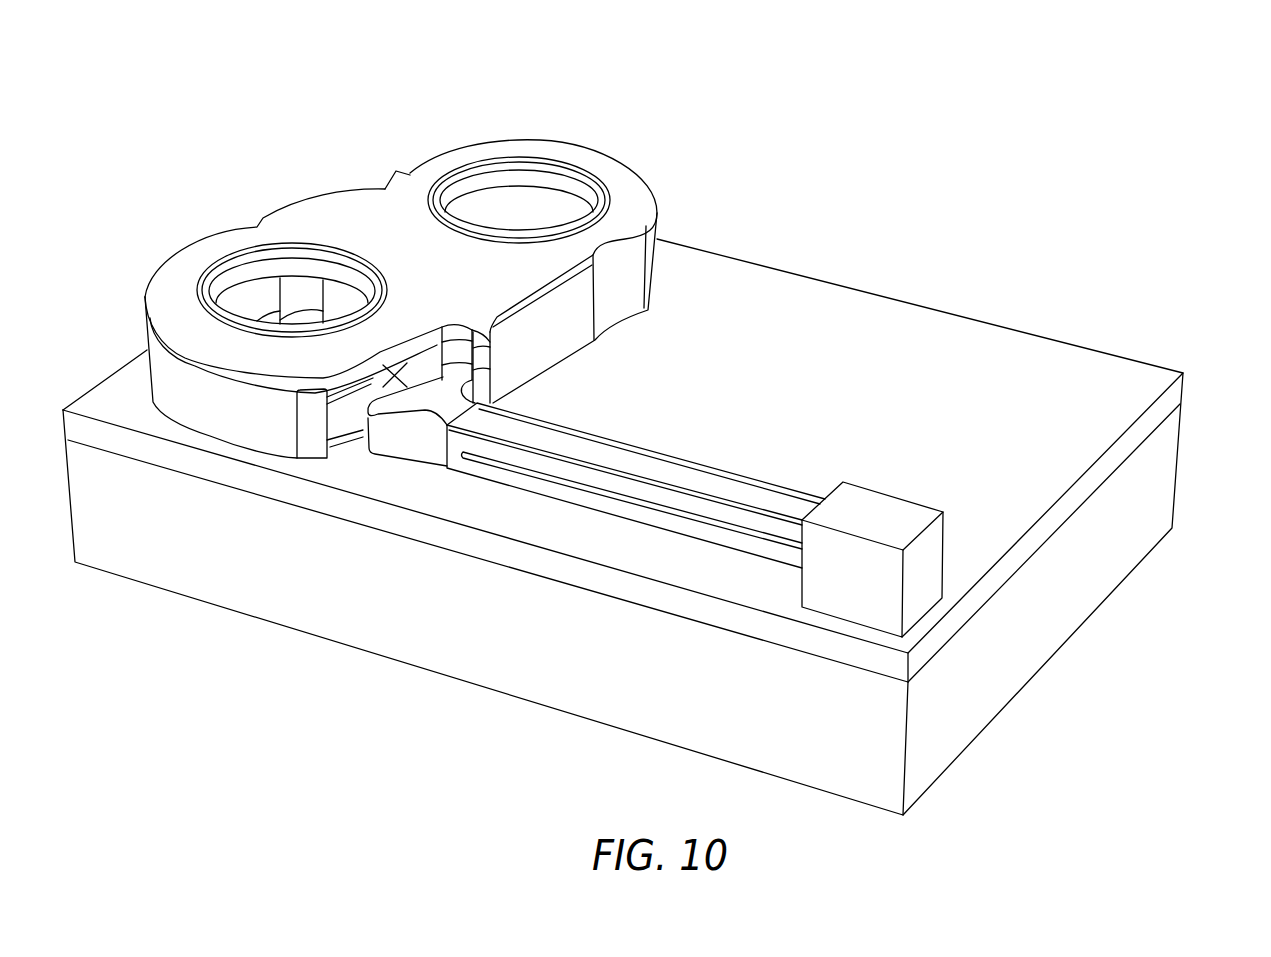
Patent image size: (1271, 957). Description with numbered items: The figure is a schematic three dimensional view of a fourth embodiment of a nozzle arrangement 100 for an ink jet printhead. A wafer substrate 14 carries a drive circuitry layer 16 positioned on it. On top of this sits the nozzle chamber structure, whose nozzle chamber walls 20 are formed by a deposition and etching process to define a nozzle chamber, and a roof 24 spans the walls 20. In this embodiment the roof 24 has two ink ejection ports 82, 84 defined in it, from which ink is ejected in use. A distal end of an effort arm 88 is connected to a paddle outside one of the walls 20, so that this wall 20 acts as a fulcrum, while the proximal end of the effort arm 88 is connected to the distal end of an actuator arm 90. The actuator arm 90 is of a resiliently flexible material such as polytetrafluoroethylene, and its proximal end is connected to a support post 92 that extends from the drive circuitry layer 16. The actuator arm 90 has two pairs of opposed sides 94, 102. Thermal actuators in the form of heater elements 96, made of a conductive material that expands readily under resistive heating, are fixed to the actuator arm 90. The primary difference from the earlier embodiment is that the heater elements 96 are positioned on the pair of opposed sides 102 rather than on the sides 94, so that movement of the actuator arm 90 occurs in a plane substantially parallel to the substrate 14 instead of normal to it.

The wafer substrate 14 is at (1160, 467).
The drive circuitry layer 16 is at (1177, 397).
The nozzle chamber walls 20 is at (163, 376).
The roof 24 is at (357, 207).
The ink ejection port 82 is at (243, 291).
The ink ejection port 84 is at (509, 186).
The effort arm 88 is at (413, 347).
The actuator arm 90 is at (743, 490).
The support post 92 is at (883, 510).
The pair of opposed sides 94 is at (530, 438).
The heater element 96 is at (590, 522).
The nozzle arrangement 100 is at (871, 203).
The pair of opposed sides 102 is at (653, 453).